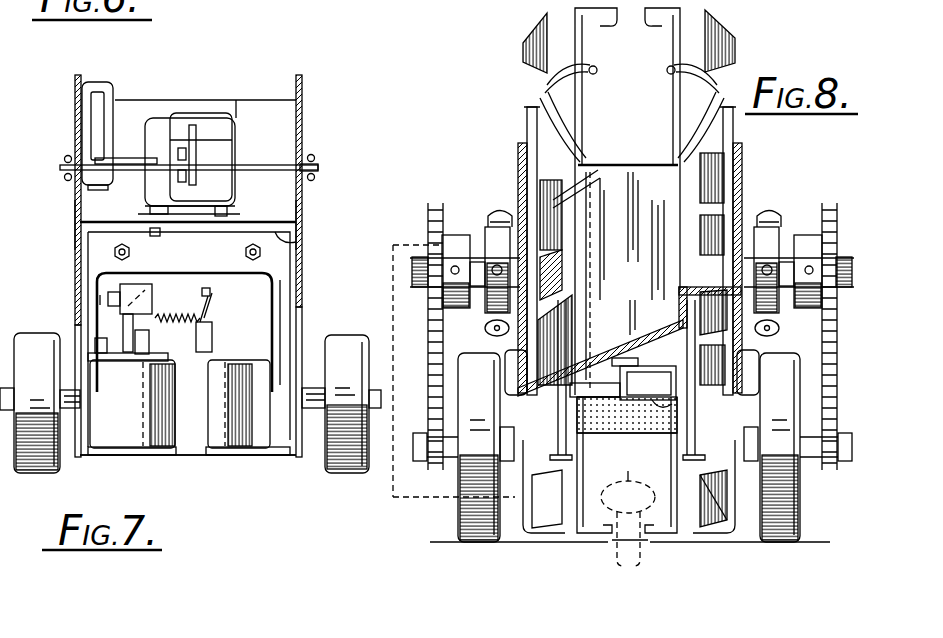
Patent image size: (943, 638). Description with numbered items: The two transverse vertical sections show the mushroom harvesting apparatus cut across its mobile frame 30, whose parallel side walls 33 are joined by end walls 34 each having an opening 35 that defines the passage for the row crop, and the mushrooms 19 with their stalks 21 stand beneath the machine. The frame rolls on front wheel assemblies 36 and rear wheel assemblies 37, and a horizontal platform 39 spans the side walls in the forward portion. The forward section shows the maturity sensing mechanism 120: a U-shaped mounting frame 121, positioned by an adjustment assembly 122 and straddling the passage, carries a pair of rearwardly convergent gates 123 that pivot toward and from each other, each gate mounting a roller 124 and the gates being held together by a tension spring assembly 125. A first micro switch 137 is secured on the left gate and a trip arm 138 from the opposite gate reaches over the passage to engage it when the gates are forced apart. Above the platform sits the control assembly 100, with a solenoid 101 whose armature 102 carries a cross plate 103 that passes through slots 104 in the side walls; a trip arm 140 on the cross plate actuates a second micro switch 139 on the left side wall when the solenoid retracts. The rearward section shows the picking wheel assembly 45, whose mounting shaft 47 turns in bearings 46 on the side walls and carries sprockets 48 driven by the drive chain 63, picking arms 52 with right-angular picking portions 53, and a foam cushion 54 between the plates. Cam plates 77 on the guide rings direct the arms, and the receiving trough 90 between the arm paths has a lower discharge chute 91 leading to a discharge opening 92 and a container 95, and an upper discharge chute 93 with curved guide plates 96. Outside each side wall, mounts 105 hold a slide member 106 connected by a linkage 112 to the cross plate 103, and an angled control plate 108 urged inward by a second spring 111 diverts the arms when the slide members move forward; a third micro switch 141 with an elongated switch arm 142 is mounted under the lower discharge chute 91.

In FIG. 8, the mushroom 19 is at (627, 482).
In FIG. 8, the stalk 21 is at (620, 551).
In FIG. 7, the mobile frame 30 is at (306, 76).
In FIG. 7, the side wall 33 is at (304, 201).
In FIG. 8, the side wall 33 is at (518, 165).
In FIG. 7, the end wall 34 is at (262, 118).
In FIG. 7, the opening 35 is at (252, 350).
In FIG. 7, the front wheel assembly 36 is at (35, 352).
In FIG. 8, the rear wheel assembly 37 is at (465, 516).
In FIG. 7, the horizontal platform 39 is at (112, 224).
In FIG. 8, the picking wheel assembly 45 is at (747, 43).
In FIG. 8, the bearing 46 is at (491, 243).
In FIG. 8, the mounting shaft 47 is at (477, 262).
In FIG. 8, the sprocket 48 is at (453, 300).
In FIG. 8, the picking arm 52 is at (680, 52).
In FIG. 8, the picking portion 53 is at (720, 42).
In FIG. 8, the foam cushion 54 is at (622, 430).
In FIG. 8, the drive chain 63 is at (428, 363).
In FIG. 8, the cam plate 77 is at (533, 106).
In FIG. 8, the receiving trough 90 is at (632, 158).
In FIG. 8, the lower discharge chute 91 is at (615, 383).
In FIG. 8, the discharge opening 92 is at (580, 198).
In FIG. 8, the upper discharge chute 93 is at (625, 241).
In FIG. 8, the container 95 is at (393, 500).
In FIG. 8, the guide plate 96 is at (687, 167).
In FIG. 7, the control assembly 100 is at (201, 98).
In FIG. 7, the solenoid 101 is at (181, 118).
In FIG. 7, the armature 102 is at (195, 139).
In FIG. 7, the cross plate 103 is at (318, 168).
In FIG. 7, the slot 104 is at (83, 160).
In FIG. 8, the mount 105 is at (507, 381).
In FIG. 8, the slide member 106 is at (482, 292).
In FIG. 8, the angled control plate 108 is at (727, 327).
In FIG. 8, the second spring 111 is at (774, 331).
In FIG. 7, the linkage 112 is at (64, 158).
In FIG. 8, the linkage 112 is at (497, 210).
In FIG. 7, the maturity sensing mechanism 120 is at (213, 465).
In FIG. 7, the mounting frame 121 is at (280, 238).
In FIG. 7, the adjustment assembly 122 is at (243, 252).
In FIG. 7, the gate 123 is at (143, 457).
In FIG. 7, the roller 124 is at (221, 396).
In FIG. 7, the tension spring assembly 125 is at (184, 324).
In FIG. 7, the first micro switch 137 is at (150, 290).
In FIG. 7, the trip arm 138 is at (100, 298).
In FIG. 7, the second micro switch 139 is at (96, 83).
In FIG. 7, the trip arm 140 is at (127, 157).
In FIG. 8, the third micro switch 141 is at (668, 394).
In FIG. 8, the switch arm 142 is at (628, 362).